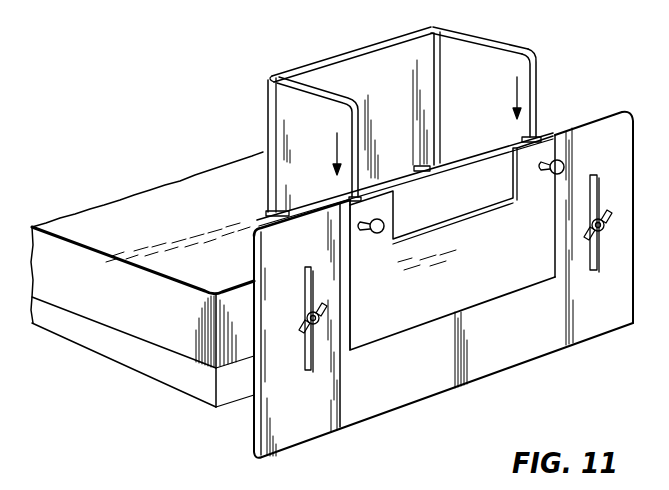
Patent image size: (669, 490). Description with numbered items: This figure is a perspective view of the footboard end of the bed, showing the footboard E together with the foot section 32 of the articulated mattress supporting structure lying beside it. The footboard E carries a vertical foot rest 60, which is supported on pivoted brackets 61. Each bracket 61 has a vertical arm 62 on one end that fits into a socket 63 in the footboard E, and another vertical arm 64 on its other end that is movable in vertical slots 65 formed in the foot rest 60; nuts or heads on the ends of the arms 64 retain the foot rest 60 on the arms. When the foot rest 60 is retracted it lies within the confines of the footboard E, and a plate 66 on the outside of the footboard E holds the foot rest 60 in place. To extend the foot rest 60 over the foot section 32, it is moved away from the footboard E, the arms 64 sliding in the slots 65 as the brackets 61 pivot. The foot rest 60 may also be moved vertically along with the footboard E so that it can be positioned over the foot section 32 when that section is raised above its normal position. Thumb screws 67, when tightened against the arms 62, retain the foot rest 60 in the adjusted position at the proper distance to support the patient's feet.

The foot section 32 is at (133, 362).
The foot rest 60 is at (410, 84).
The pivoted bracket 61 is at (492, 44).
The vertical arm 62 is at (536, 88).
The socket 63 is at (541, 136).
The vertical arm 64 is at (428, 30).
The vertical slot 65 is at (311, 62).
The plate 66 is at (487, 293).
The thumb screw 67 is at (562, 162).
The footboard E is at (574, 348).